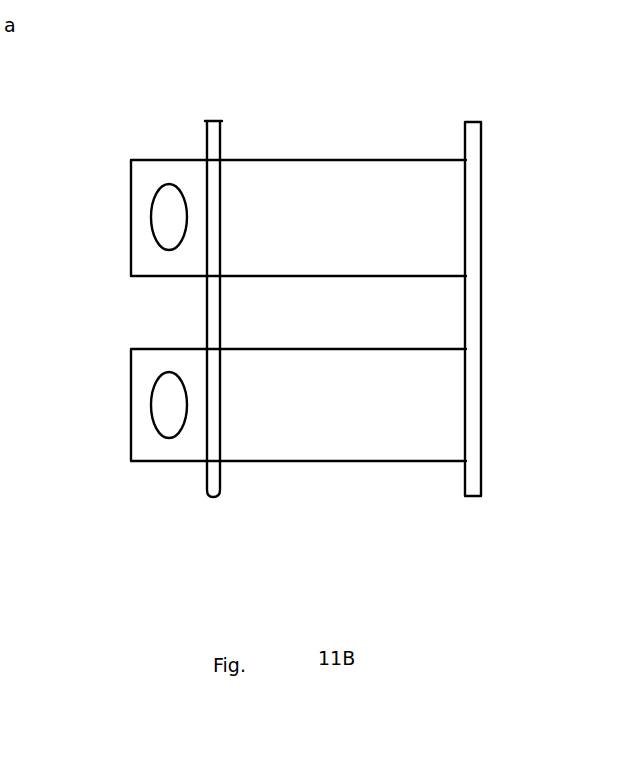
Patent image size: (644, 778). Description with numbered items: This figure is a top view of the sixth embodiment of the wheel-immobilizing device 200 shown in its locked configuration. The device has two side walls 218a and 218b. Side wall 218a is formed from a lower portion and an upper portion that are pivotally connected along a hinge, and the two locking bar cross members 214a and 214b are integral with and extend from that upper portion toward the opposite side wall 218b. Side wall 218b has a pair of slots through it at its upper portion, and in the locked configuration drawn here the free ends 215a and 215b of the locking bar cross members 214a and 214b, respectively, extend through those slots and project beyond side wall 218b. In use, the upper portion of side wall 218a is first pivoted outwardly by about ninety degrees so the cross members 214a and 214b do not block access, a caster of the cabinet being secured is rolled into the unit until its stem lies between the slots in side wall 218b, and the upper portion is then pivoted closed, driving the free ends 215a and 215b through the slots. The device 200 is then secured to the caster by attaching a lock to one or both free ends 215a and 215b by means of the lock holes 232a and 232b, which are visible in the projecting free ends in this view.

The wheel-immobilizing device 200 is at (458, 17).
The locking bar cross member 214a is at (430, 181).
The locking bar cross member 214b is at (347, 450).
The free end 215a is at (146, 171).
The free end 215b is at (151, 451).
The side wall 218a is at (481, 128).
The side wall 218b is at (230, 130).
The lock hole 232a is at (165, 232).
The lock hole 232b is at (163, 420).